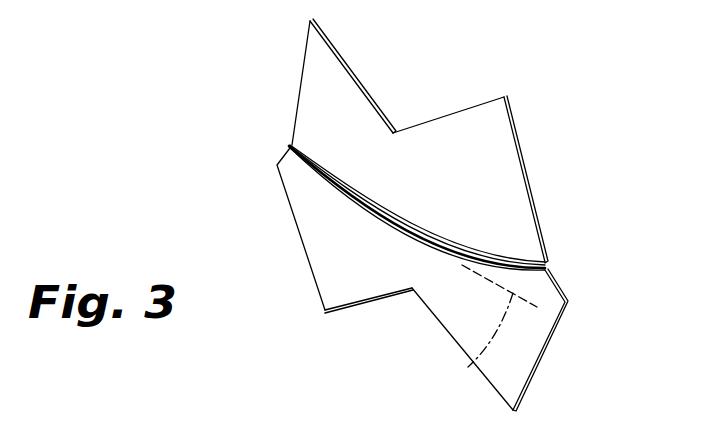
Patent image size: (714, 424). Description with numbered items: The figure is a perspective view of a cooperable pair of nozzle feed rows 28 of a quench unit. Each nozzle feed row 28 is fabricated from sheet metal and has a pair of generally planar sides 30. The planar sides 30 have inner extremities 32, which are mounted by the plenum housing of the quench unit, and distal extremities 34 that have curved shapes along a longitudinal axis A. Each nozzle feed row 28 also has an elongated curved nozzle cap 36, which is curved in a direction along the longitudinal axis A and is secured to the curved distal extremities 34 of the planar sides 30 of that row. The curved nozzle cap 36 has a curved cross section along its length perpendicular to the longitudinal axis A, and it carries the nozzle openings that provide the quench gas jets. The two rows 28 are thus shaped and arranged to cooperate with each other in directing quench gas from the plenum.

The nozzle feed row 28 is at (407, 215).
The planar side 30 is at (318, 101).
The inner extremity 32 is at (355, 123).
The distal extremity 34 is at (350, 183).
The curved nozzle cap 36 is at (291, 148).
The longitudinal axis A is at (475, 362).